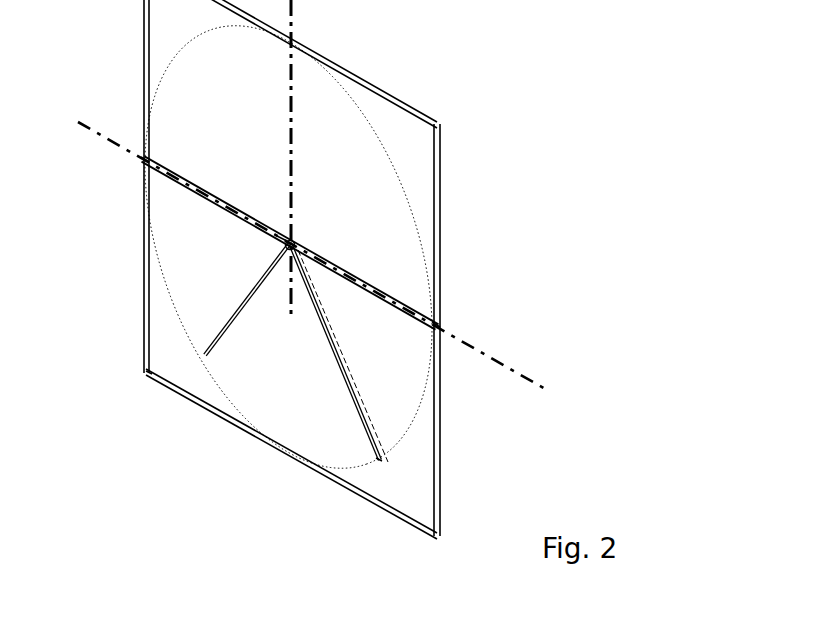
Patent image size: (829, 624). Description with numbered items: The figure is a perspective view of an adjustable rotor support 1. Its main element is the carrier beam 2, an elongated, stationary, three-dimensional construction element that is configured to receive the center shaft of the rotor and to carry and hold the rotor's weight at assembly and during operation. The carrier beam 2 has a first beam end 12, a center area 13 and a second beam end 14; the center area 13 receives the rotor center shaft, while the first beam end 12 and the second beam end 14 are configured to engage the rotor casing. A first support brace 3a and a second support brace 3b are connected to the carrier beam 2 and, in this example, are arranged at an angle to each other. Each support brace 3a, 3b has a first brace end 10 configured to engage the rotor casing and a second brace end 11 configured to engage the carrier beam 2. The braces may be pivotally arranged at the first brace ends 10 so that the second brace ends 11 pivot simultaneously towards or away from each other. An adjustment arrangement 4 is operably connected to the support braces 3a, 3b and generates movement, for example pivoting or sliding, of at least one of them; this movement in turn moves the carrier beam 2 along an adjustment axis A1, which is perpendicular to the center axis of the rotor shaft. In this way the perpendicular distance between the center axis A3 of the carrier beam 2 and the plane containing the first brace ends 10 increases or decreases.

The adjustable rotor support 1 is at (332, 237).
The carrier beam 2 is at (205, 195).
The first support brace 3a is at (207, 353).
The second support brace 3b is at (356, 409).
The adjustment arrangement 4 is at (222, 293).
The first brace end 10 is at (190, 366).
The second brace end 11 is at (258, 247).
The first beam end 12 is at (147, 150).
The center area 13 is at (281, 218).
The second beam end 14 is at (438, 308).
The adjustment axis A1 is at (290, 8).
The center axis of the carrier beam A3 is at (498, 360).